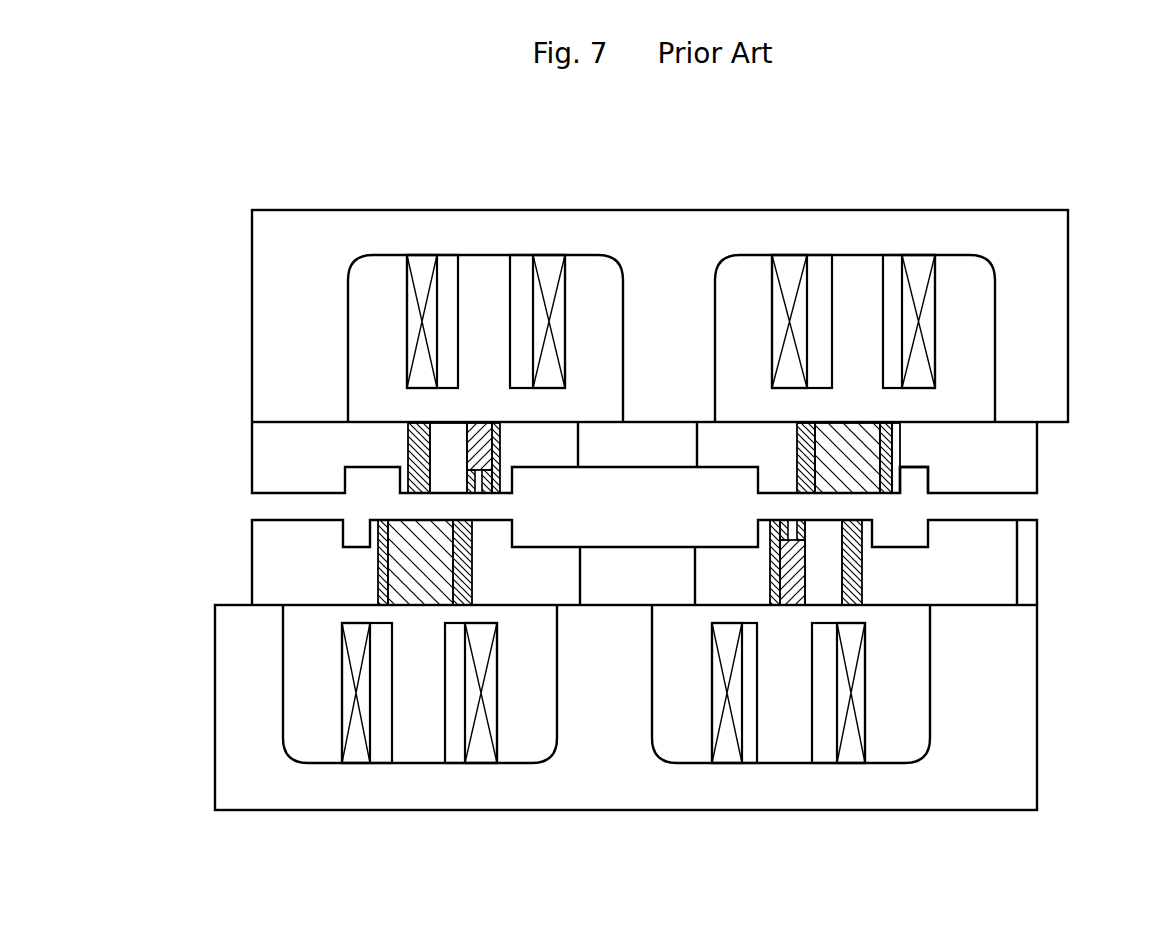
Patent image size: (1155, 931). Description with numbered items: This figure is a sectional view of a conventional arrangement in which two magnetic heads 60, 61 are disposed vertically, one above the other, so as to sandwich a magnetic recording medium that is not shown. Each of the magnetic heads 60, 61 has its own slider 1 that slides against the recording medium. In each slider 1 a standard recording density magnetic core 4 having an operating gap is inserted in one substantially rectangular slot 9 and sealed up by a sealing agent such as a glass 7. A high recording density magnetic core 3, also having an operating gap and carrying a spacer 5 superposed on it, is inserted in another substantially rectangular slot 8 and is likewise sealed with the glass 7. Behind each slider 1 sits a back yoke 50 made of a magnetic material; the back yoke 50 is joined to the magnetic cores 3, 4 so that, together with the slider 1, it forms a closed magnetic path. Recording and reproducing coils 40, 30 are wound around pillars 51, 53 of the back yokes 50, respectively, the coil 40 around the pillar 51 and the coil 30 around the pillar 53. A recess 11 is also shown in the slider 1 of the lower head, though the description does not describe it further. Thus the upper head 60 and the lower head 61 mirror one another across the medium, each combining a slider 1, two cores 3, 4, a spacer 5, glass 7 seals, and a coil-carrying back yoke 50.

The slider 1 is at (1037, 470).
The high recording density magnetic core 3 is at (470, 448).
The standard recording density magnetic core 4 is at (860, 455).
The spacer 5 is at (440, 432).
The glass 7 is at (810, 420).
The slot 8 is at (470, 478).
The slot 9 is at (895, 458).
The recess 11 is at (903, 540).
The reproducing coil 30 is at (423, 268).
The recording coil 40 is at (792, 265).
The back yoke 50 is at (938, 210).
The pillar 51 is at (853, 282).
The pillar 53 is at (487, 278).
The magnetic head 60 is at (724, 183).
The magnetic head 61 is at (610, 824).